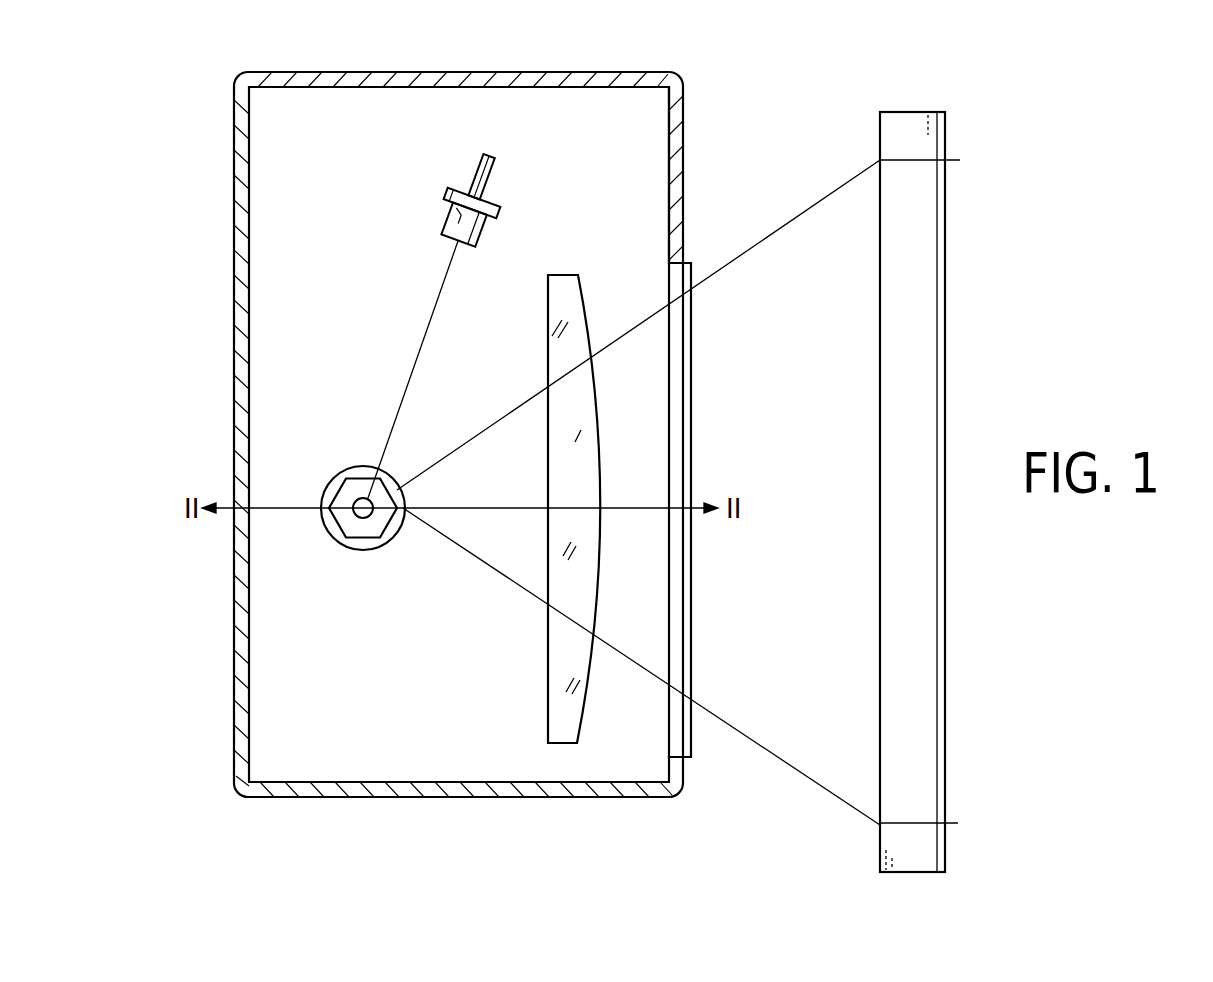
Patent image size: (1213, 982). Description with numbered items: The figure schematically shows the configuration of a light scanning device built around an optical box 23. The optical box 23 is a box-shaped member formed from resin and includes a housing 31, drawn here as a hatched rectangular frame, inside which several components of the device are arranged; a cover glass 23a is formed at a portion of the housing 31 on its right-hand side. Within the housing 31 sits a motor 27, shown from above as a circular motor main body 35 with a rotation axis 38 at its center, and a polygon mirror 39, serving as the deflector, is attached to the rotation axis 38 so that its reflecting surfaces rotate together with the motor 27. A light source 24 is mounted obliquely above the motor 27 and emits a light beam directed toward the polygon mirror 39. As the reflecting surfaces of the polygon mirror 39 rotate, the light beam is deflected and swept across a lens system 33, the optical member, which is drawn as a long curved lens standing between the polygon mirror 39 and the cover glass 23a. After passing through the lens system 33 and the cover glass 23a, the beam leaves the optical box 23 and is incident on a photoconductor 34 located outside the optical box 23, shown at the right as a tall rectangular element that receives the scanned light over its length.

The optical box 23 is at (500, 410).
The cover glass 23a is at (690, 395).
The light source 24 is at (448, 215).
The motor 27 is at (374, 502).
The housing 31 is at (335, 78).
The lens system 33 is at (568, 287).
The photoconductor 34 is at (904, 120).
The motor main body 35 is at (358, 550).
The rotation axis 38 is at (363, 498).
The polygon mirror 39 is at (380, 524).